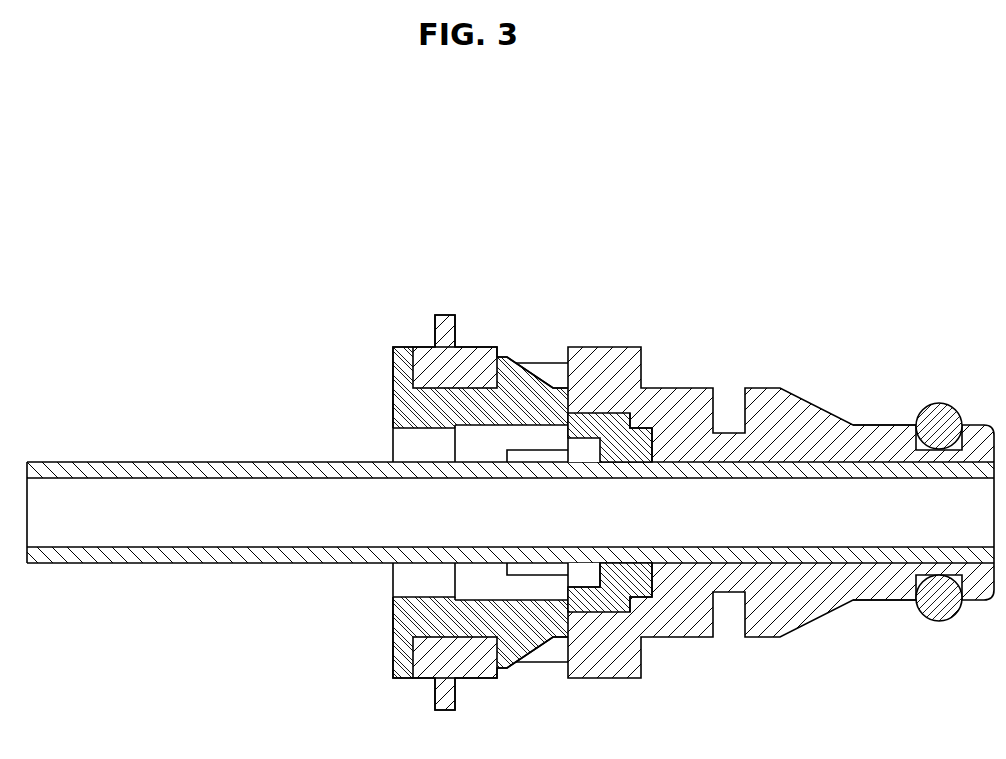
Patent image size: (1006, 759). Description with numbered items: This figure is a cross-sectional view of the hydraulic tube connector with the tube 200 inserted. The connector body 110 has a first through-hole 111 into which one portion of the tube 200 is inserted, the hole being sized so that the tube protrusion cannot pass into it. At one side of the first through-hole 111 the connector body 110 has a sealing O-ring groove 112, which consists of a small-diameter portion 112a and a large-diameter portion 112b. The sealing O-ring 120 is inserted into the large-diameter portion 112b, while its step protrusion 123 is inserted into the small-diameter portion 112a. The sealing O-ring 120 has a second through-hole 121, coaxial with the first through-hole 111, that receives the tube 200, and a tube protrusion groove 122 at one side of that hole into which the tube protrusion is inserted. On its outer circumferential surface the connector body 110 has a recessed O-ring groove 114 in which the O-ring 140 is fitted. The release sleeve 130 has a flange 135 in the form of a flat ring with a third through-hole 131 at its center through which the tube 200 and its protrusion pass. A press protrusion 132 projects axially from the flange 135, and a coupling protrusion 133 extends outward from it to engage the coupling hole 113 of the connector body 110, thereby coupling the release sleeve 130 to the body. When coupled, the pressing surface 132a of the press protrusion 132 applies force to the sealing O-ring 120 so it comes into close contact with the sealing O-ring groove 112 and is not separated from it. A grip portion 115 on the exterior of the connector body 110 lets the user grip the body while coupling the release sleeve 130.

The connector body 110 is at (773, 368).
The first through-hole 111 is at (886, 470).
The sealing O-ring groove 112 is at (640, 661).
The small-diameter portion 112a is at (655, 593).
The large-diameter portion 112b is at (597, 607).
The coupling hole 113 is at (560, 368).
The O-ring groove 114 is at (941, 577).
The grip portion 115 is at (448, 315).
The sealing O-ring 120 is at (629, 534).
The second through-hole 121 is at (640, 637).
The tube protrusion groove 122 is at (602, 441).
The step protrusion 123 is at (645, 430).
The release sleeve 130 is at (436, 489).
The third through-hole 131 is at (423, 432).
The press protrusion 132 is at (473, 397).
The pressing surface 132a is at (568, 398).
The coupling protrusion 133 is at (533, 370).
The flange 135 is at (403, 347).
The O-ring 140 is at (950, 390).
The tube 200 is at (120, 448).